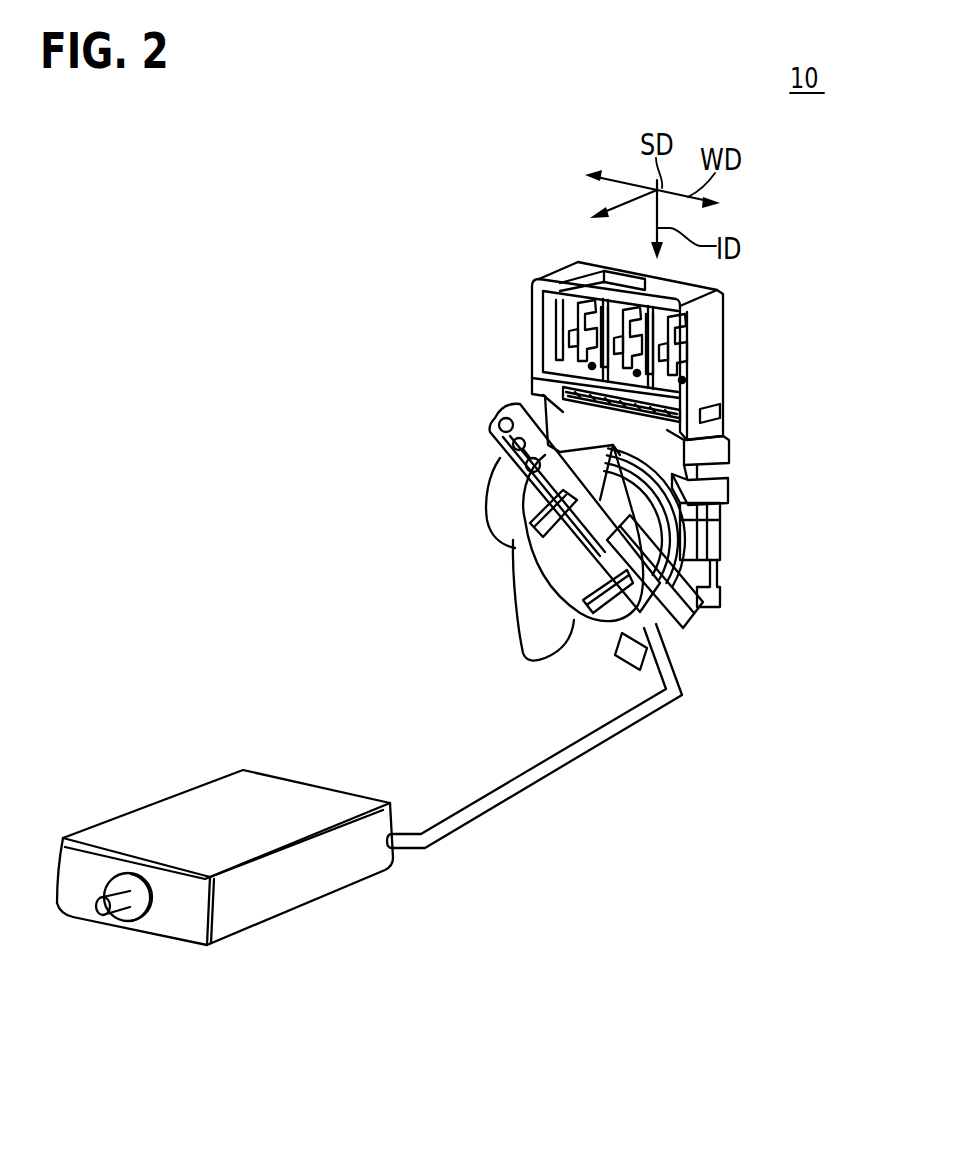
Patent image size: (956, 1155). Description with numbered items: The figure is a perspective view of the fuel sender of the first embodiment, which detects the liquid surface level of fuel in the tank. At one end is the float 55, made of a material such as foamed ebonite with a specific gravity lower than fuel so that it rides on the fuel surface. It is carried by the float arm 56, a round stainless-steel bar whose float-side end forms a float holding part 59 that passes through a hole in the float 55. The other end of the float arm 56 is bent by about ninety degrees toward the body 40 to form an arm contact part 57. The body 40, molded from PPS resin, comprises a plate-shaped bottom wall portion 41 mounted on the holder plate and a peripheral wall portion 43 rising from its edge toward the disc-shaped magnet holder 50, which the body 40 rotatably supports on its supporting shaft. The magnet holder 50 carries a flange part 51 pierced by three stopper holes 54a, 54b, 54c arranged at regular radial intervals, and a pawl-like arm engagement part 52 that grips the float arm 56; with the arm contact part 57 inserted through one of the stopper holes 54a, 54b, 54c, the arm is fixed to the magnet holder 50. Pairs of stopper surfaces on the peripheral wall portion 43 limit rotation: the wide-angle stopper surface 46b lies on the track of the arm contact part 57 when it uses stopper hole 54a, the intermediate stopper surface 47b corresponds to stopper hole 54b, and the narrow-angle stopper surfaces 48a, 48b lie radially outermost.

The body 40 is at (706, 340).
The bottom wall portion 41 is at (606, 420).
The peripheral wall portion 43 is at (530, 312).
The wide-angle stopper surface 46b is at (716, 495).
The intermediate stopper surface 47b is at (712, 465).
The narrow-angle stopper surface 48a is at (530, 383).
The narrow-angle stopper surface 48b is at (700, 430).
The magnet holder 50 is at (640, 527).
The flange part 51 is at (510, 405).
The arm engagement part 52 is at (565, 620).
The stopper hole 54a is at (512, 527).
The stopper hole 54b is at (507, 493).
The stopper hole 54c is at (500, 437).
The float 55 is at (195, 817).
The float arm 56 is at (535, 790).
The arm contact part 57 is at (512, 447).
The float holding part 59 is at (118, 903).